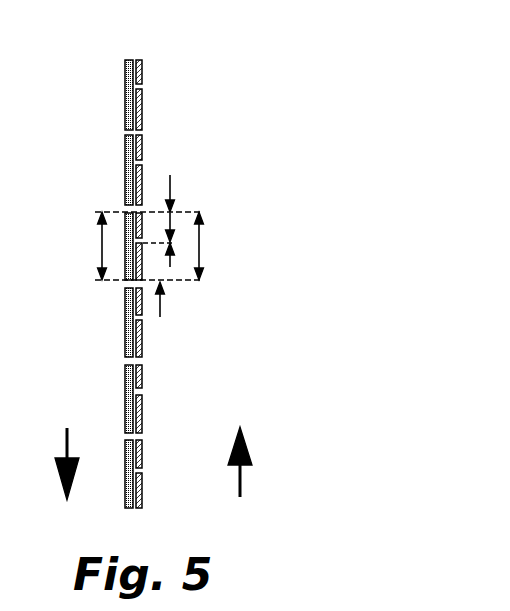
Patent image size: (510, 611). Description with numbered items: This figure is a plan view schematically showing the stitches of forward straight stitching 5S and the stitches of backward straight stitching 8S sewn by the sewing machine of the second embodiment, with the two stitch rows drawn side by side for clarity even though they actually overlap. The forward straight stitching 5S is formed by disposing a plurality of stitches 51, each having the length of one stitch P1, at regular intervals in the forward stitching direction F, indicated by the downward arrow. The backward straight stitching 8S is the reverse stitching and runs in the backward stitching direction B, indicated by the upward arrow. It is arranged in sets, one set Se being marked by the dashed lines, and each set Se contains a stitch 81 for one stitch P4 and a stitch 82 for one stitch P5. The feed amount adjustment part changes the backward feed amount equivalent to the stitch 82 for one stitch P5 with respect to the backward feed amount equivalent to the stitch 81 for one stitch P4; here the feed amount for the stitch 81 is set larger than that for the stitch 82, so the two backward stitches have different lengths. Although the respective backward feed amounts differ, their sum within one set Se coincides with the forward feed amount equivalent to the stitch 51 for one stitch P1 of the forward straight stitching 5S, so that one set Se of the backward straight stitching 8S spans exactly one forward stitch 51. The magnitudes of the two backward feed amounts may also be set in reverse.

The forward straight stitching 5S is at (91, 276).
The backward straight stitching 8S is at (179, 270).
The stitch 51 is at (125, 147).
The stitch 81 is at (142, 120).
The stitch 82 is at (142, 80).
The one stitch P1 is at (84, 246).
The one stitch P4 is at (163, 315).
The one stitch P5 is at (175, 208).
The set Se is at (219, 246).
The forward stitching direction F is at (67, 450).
The backward stitching direction B is at (240, 448).